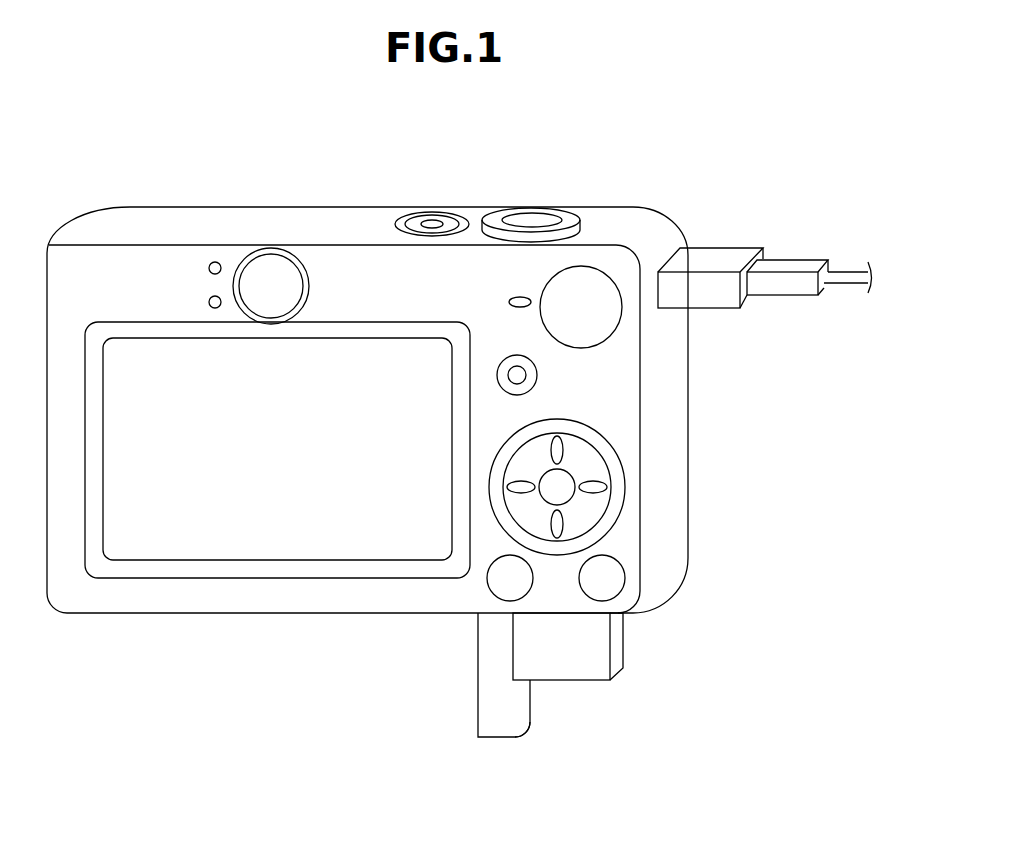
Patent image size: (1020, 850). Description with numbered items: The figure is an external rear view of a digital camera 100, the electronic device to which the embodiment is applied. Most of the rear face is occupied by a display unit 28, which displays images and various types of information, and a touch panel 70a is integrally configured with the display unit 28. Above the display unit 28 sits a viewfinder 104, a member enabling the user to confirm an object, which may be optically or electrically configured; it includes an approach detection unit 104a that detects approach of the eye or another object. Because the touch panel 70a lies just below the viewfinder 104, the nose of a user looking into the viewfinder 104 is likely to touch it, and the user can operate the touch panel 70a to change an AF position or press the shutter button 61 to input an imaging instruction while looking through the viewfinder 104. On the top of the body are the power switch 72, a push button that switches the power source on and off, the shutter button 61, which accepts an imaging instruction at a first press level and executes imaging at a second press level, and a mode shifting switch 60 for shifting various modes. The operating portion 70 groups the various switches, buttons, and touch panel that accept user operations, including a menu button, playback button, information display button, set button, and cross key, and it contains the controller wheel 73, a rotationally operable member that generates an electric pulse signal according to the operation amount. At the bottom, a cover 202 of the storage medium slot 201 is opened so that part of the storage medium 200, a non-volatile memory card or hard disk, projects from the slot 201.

The digital camera 100 is at (182, 627).
The display unit 28 is at (277, 360).
The touch panel 70a is at (175, 353).
The viewfinder 104 is at (287, 226).
The approach detection unit 104a is at (268, 278).
The power switch 72 is at (436, 220).
The shutter button 61 is at (532, 218).
The mode shifting switch 60 is at (593, 280).
The operating portion 70 is at (558, 241).
The controller wheel 73 is at (503, 527).
The storage medium slot 201 is at (523, 617).
The storage medium 200 is at (580, 662).
The cover 202 is at (518, 697).